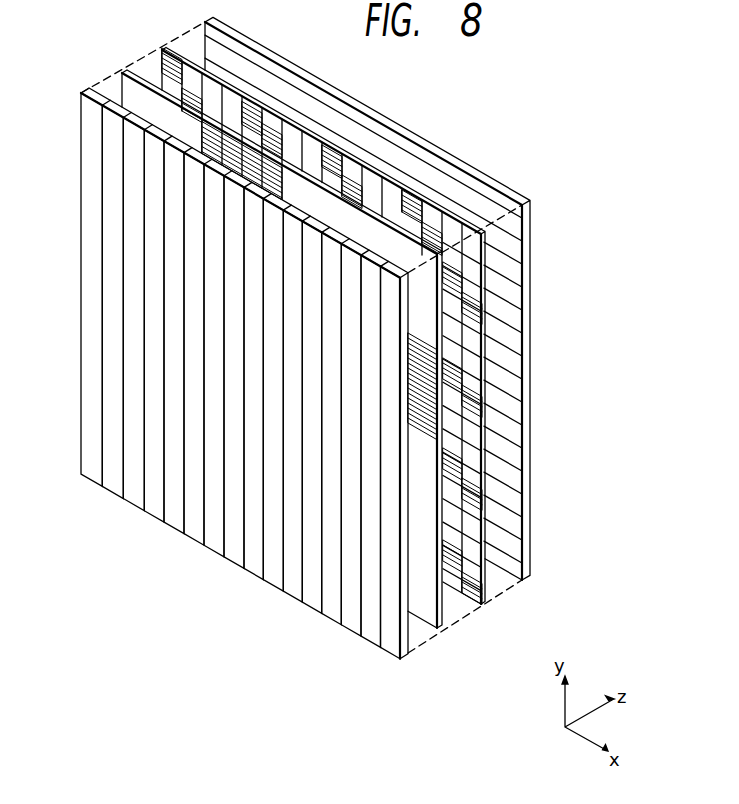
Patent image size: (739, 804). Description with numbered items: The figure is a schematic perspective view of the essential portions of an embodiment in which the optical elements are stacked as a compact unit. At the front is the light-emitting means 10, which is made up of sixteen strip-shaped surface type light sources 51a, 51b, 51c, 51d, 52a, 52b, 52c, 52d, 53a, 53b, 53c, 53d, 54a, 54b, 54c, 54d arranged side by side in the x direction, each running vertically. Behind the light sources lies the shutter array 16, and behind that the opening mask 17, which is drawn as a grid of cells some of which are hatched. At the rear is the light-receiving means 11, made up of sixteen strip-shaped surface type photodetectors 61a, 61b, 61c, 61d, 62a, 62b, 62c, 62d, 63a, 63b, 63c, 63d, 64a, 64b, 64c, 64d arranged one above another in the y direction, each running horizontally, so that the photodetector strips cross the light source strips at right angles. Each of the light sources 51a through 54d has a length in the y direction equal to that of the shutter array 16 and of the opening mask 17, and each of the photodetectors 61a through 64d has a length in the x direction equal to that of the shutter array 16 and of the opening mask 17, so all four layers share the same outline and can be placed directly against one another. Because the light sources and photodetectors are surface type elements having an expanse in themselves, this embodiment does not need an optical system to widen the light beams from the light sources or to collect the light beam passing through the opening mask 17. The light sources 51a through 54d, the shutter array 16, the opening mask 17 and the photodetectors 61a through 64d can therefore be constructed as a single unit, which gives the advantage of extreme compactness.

The light-emitting means 10 is at (371, 746).
The light-receiving means 11 is at (607, 197).
The shutter array 16 is at (435, 603).
The opening mask 17 is at (492, 578).
The surface type light source 51a is at (92, 476).
The surface type light source 51b is at (113, 488).
The surface type light source 51c is at (134, 501).
The surface type light source 51d is at (154, 512).
The surface type light source 52a is at (174, 524).
The surface type light source 52b is at (194, 535).
The surface type light source 52c is at (214, 547).
The surface type light source 52d is at (234, 559).
The surface type light source 53a is at (254, 570).
The surface type light source 53b is at (273, 581).
The surface type light source 53c is at (293, 593).
The surface type light source 53d is at (312, 604).
The surface type light source 54a is at (332, 615).
The surface type light source 54b is at (351, 626).
The surface type light source 54c is at (371, 638).
The surface type light source 54d is at (390, 649).
The surface type photodetector 61a is at (531, 218).
The surface type photodetector 61b is at (531, 241).
The surface type photodetector 61c is at (531, 264).
The surface type photodetector 61d is at (531, 287).
The surface type photodetector 62a is at (531, 310).
The surface type photodetector 62b is at (531, 333).
The surface type photodetector 62c is at (531, 356).
The surface type photodetector 62d is at (531, 379).
The surface type photodetector 63a is at (531, 402).
The surface type photodetector 63b is at (531, 425).
The surface type photodetector 63c is at (531, 448).
The surface type photodetector 63d is at (531, 471).
The surface type photodetector 64a is at (531, 494).
The surface type photodetector 64b is at (531, 517).
The surface type photodetector 64c is at (531, 540).
The surface type photodetector 64d is at (531, 563).